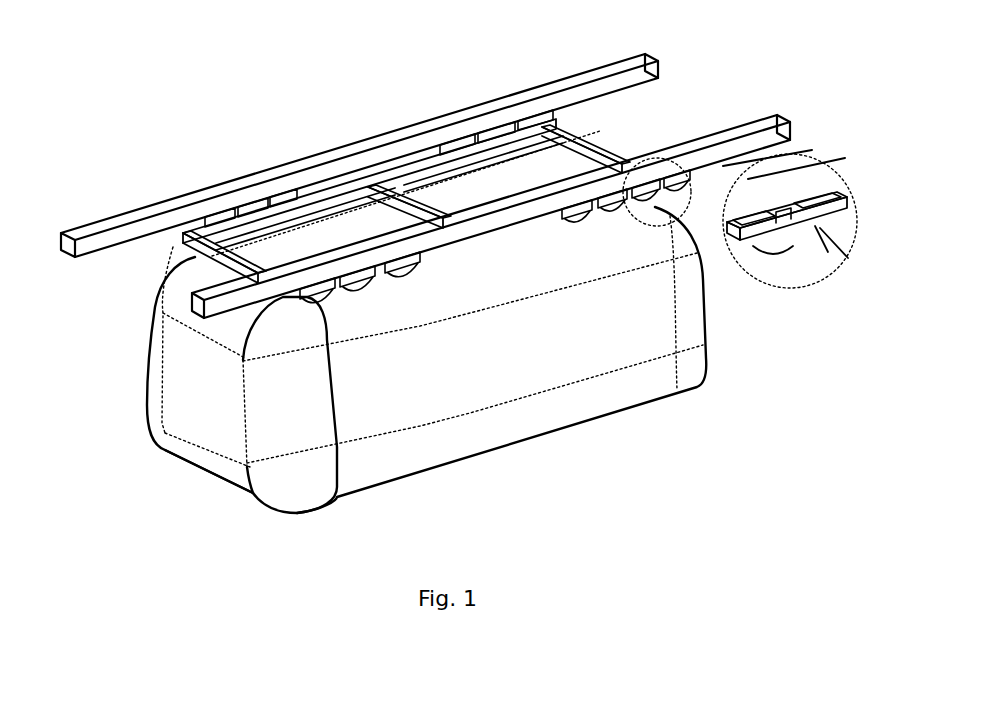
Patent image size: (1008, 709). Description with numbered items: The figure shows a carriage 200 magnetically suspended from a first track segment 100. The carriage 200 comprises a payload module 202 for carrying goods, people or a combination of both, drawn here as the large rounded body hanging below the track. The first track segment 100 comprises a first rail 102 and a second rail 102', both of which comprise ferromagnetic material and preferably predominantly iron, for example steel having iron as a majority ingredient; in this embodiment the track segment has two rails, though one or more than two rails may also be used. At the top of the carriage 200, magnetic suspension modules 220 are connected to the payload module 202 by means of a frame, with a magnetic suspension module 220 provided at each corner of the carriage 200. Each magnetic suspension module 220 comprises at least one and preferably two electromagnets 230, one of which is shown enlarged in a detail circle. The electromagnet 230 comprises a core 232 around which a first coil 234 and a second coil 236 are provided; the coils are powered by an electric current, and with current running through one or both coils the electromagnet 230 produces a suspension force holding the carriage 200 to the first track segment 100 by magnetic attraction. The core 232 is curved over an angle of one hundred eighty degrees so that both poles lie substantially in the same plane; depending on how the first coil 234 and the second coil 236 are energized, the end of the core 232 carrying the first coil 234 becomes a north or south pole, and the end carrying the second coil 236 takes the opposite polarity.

The first track segment 100 is at (716, 74).
The first rail 102 is at (359, 155).
The second rail 102' is at (543, 190).
The carriage 200 is at (124, 387).
The payload module 202 is at (197, 457).
The magnetic suspension module 220 is at (624, 245).
The electromagnet 230 is at (830, 170).
The core 232 is at (792, 246).
The first coil 234 is at (752, 232).
The second coil 236 is at (827, 210).